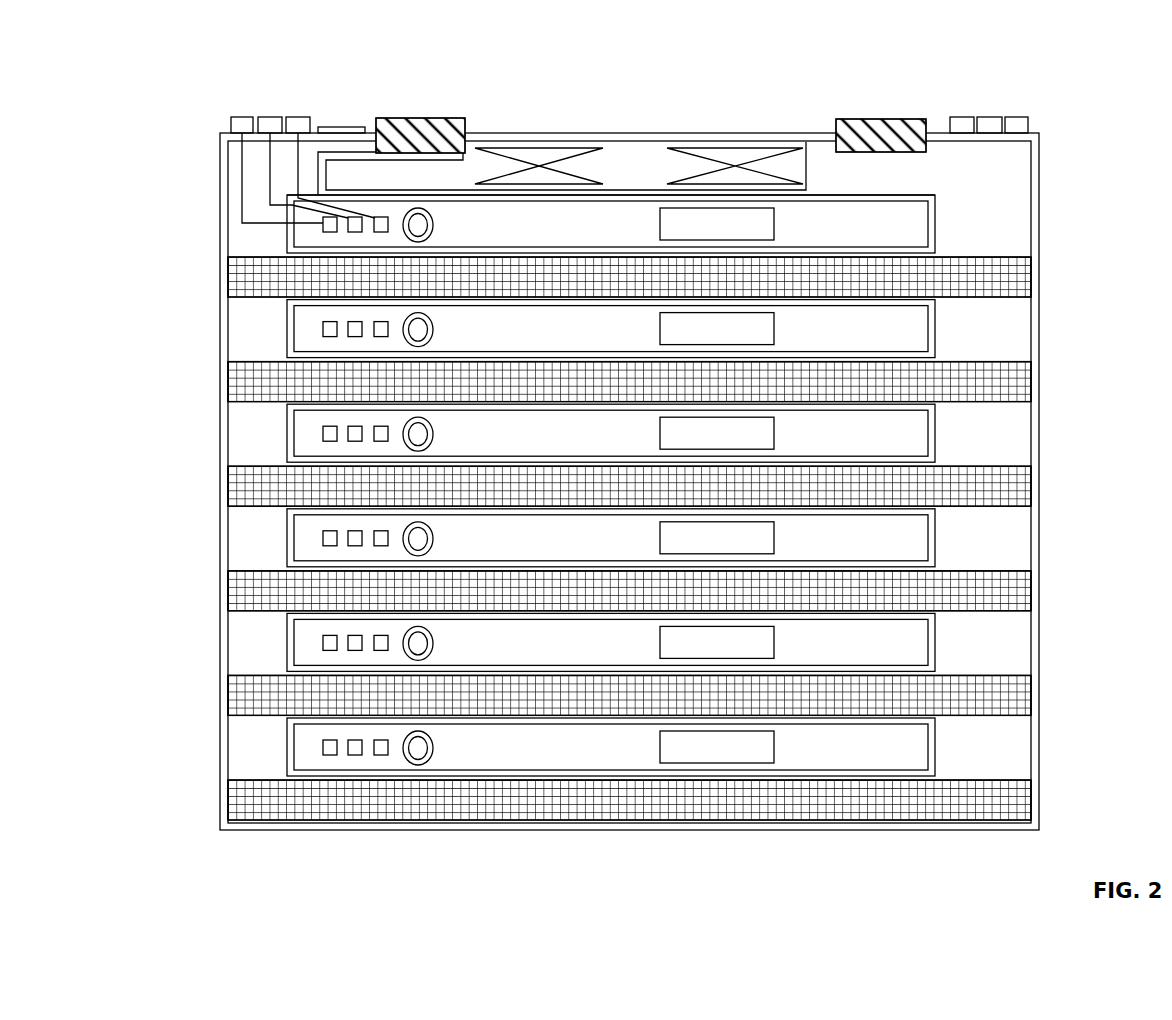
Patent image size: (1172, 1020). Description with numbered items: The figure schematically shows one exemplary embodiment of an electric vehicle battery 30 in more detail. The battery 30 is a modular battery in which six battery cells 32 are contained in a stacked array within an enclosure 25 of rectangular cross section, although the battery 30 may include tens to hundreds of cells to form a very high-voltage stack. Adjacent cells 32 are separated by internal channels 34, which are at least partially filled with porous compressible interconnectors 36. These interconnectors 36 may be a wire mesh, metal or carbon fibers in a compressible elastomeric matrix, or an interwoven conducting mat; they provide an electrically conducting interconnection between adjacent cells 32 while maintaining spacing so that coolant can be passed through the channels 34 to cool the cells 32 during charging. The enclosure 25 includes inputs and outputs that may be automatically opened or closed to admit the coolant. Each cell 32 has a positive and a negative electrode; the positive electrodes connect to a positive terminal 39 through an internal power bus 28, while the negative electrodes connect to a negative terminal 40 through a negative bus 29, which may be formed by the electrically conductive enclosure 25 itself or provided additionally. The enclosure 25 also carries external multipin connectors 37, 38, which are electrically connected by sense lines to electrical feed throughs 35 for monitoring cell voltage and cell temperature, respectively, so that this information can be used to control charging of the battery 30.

The enclosure 25 is at (218, 760).
The internal power bus 28 is at (885, 188).
The negative bus 29 is at (753, 132).
The electric vehicle battery 30 is at (621, 449).
The battery cells 32 is at (1049, 202).
The internal channels 34 is at (207, 277).
The electrical feed throughs 35 is at (327, 758).
The porous compressible interconnectors 36 is at (1020, 278).
The multipin connector 37 is at (230, 125).
The multipin connector 38 is at (258, 112).
The positive terminal 39 is at (427, 118).
The negative terminal 40 is at (887, 118).